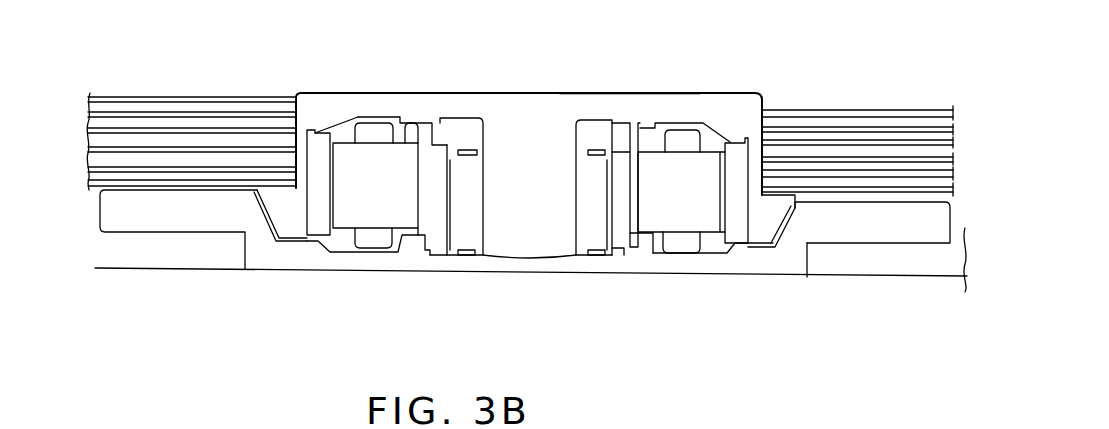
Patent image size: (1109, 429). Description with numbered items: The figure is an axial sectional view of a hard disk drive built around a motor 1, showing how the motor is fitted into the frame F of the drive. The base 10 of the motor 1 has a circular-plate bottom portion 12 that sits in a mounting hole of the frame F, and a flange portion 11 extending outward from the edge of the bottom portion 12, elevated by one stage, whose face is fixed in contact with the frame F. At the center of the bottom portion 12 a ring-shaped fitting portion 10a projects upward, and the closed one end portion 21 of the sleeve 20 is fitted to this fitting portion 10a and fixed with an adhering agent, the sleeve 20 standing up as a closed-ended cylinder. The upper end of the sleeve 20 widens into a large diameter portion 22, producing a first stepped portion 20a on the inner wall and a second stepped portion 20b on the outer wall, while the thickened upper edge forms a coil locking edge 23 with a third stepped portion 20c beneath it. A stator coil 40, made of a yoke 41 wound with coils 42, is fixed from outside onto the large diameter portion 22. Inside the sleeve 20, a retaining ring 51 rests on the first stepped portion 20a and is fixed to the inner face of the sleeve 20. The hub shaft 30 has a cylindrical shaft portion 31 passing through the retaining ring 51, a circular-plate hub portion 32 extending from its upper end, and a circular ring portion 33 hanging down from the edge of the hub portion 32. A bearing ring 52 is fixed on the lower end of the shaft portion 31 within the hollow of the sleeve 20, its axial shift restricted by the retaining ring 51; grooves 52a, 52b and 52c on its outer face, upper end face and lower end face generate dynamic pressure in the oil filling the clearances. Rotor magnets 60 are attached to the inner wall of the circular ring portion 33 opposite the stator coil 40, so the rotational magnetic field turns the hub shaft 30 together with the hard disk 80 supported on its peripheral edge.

The motor 1 is at (527, 90).
The base 10 is at (212, 232).
The fitting portion 10a is at (643, 248).
The flange portion 11 is at (853, 238).
The bottom portion 12 is at (780, 267).
The sleeve 20 is at (598, 257).
The first stepped portion 20a is at (437, 135).
The second stepped portion 20b is at (418, 232).
The third stepped portion 20c is at (417, 128).
The one end portion 21 is at (617, 258).
The large diameter portion 22 is at (636, 135).
The coil locking edge 23 is at (655, 128).
The hub shaft 30 is at (493, 93).
The shaft portion 31 is at (527, 252).
The hub portion 32 is at (640, 107).
The circular ring portion 33 is at (272, 237).
The stator coil 40 is at (352, 233).
The yoke 41 is at (710, 137).
The coils 42 is at (372, 242).
The retaining ring 51 is at (458, 138).
The bearing ring 52 is at (490, 240).
The groove 52a is at (595, 150).
The groove 52b is at (443, 245).
The groove 52c is at (465, 255).
The rotor magnets 60 is at (315, 235).
The hard disk 80 is at (208, 97).
The frame F is at (115, 268).